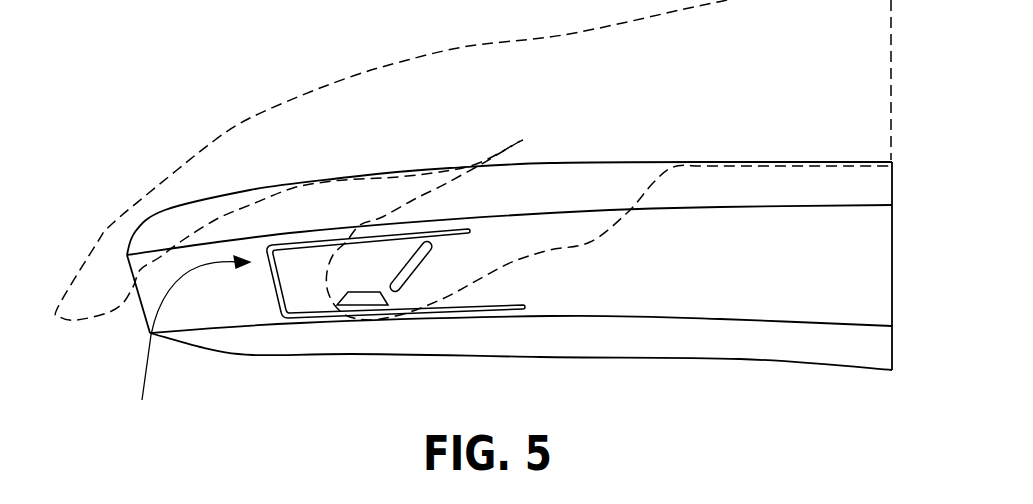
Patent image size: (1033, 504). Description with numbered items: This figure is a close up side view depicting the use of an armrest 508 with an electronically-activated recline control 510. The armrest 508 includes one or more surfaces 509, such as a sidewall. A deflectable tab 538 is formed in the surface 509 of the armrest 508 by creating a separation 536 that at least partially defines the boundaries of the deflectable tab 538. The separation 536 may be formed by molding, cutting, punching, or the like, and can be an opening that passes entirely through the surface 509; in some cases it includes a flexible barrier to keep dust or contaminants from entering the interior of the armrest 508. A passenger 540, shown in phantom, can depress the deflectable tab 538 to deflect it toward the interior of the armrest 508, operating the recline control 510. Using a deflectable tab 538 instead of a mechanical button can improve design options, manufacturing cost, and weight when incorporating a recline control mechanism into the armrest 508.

The armrest 508 is at (142, 317).
The surface 509 is at (786, 277).
The electronically-activated recline control 510 is at (187, 344).
The separation 536 is at (273, 288).
The deflectable tab 538 is at (302, 295).
The passenger 540 is at (348, 96).